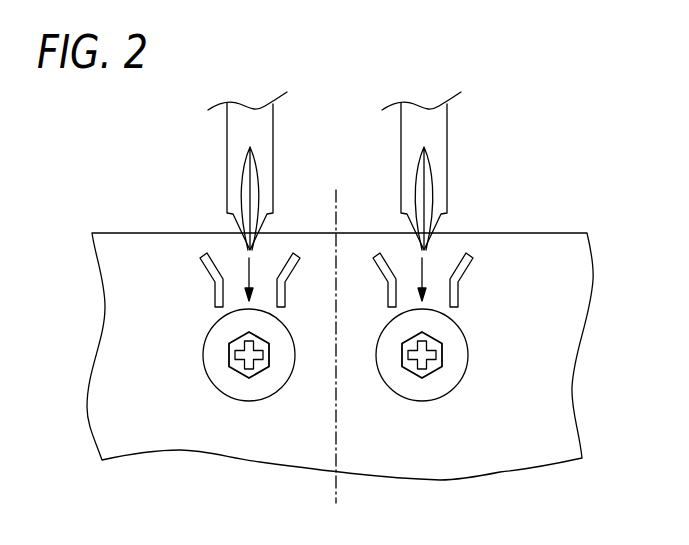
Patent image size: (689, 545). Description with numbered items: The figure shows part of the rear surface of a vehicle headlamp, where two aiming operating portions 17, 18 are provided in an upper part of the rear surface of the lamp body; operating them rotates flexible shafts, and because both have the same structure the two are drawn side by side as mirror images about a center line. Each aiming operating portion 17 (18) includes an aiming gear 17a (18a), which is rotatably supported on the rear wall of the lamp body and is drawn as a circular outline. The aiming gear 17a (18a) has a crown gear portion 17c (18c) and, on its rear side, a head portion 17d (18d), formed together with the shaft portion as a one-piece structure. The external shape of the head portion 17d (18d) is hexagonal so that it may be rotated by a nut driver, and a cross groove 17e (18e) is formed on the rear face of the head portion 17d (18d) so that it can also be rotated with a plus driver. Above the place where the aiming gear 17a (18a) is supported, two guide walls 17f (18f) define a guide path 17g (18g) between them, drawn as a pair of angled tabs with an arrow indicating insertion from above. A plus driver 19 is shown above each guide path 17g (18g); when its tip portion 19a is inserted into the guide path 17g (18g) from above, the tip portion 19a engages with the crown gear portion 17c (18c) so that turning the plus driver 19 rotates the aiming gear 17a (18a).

The aiming operating portion 17 is at (222, 327).
The aiming gear 17a is at (223, 405).
The crown gear portion 17c is at (223, 372).
The head portion 17d is at (263, 372).
The cross groove 17e is at (240, 383).
The guide walls 17f is at (208, 278).
The guide path 17g is at (267, 262).
The aiming operating portion 18 is at (451, 348).
The aiming gear 18a is at (451, 415).
The crown gear portion 18c is at (451, 373).
The head portion 18d is at (430, 384).
The cross groove 18e is at (436, 368).
The guide walls 18f is at (383, 267).
The guide path 18g is at (442, 265).
The plus driver 19 is at (340, 161).
The tip portion 19a is at (243, 243).